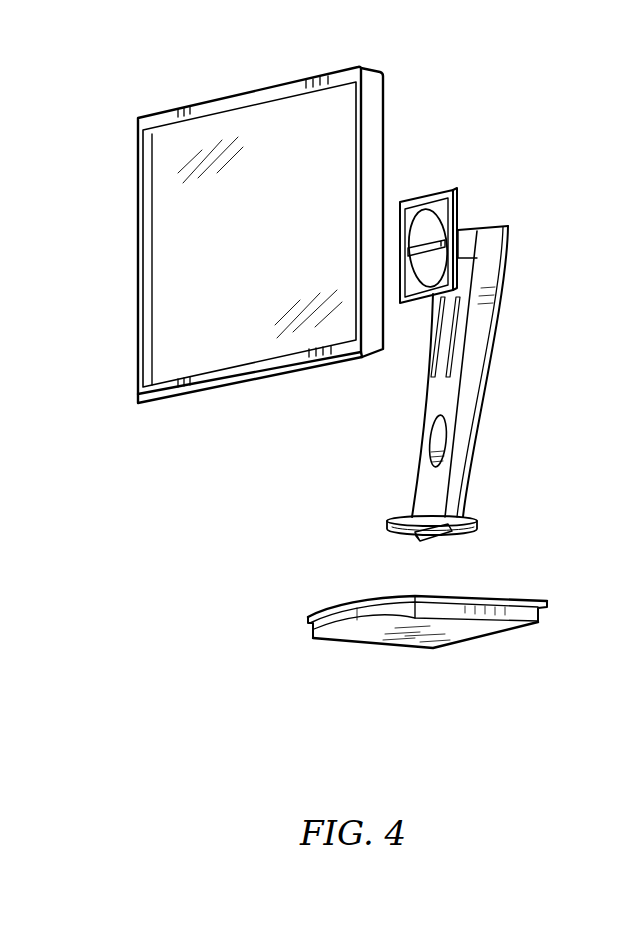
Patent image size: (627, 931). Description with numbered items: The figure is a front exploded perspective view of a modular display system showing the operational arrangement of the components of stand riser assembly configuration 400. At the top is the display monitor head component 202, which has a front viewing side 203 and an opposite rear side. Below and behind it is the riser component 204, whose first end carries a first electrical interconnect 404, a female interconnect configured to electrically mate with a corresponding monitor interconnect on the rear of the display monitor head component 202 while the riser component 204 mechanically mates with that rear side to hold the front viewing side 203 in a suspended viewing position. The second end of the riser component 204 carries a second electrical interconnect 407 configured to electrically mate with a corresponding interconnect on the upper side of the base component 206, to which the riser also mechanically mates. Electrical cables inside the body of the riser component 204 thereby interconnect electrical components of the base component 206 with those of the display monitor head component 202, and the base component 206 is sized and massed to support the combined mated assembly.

The stand riser assembly configuration 400 is at (111, 78).
The display monitor head component 202 is at (266, 87).
The front viewing side 203 is at (172, 222).
The first electrical interconnect 404 is at (428, 236).
The riser component 204 is at (497, 337).
The second electrical interconnect 407 is at (413, 539).
The base component 206 is at (513, 597).